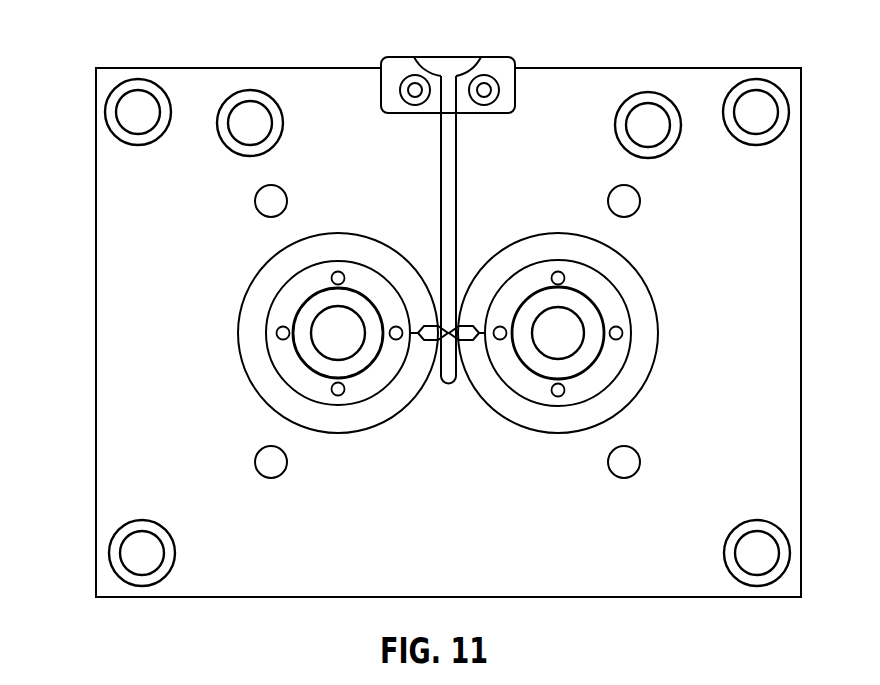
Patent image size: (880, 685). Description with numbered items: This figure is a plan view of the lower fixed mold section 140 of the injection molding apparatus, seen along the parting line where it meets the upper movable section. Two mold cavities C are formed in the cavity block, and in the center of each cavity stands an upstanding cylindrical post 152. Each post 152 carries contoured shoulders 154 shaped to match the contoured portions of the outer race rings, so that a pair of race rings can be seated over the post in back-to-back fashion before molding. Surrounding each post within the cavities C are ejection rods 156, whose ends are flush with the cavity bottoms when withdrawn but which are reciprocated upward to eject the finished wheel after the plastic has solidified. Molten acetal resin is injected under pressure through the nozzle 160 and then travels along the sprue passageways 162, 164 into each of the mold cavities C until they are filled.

The lower fixed mold section 140 is at (96, 300).
The nozzle 160 is at (505, 68).
The sprue passageway 162 is at (449, 208).
The sprue passageway 164 is at (478, 342).
The mold cavities C is at (386, 421).
The contoured shoulders 154 is at (302, 318).
The upstanding cylindrical posts 152 is at (320, 332).
The ejection rods 156 is at (341, 272).